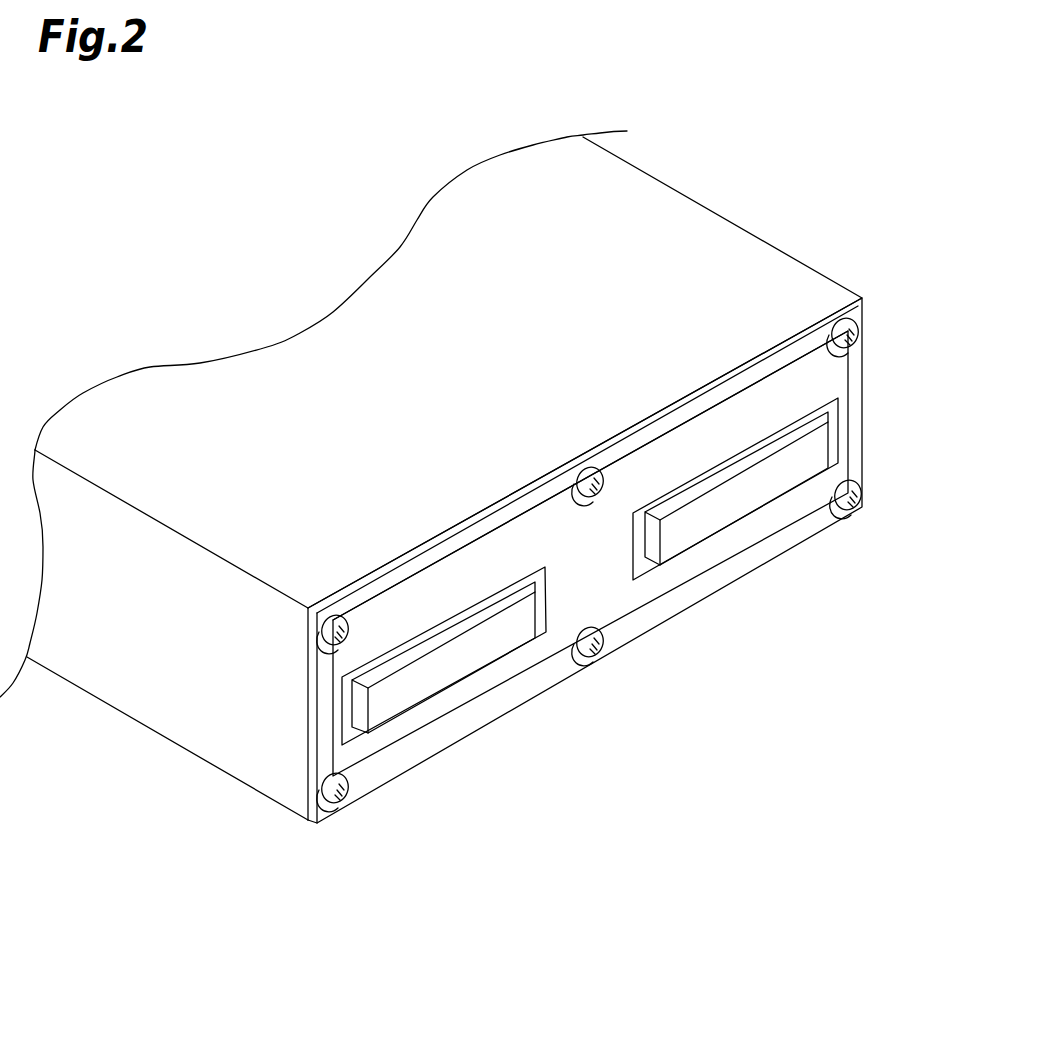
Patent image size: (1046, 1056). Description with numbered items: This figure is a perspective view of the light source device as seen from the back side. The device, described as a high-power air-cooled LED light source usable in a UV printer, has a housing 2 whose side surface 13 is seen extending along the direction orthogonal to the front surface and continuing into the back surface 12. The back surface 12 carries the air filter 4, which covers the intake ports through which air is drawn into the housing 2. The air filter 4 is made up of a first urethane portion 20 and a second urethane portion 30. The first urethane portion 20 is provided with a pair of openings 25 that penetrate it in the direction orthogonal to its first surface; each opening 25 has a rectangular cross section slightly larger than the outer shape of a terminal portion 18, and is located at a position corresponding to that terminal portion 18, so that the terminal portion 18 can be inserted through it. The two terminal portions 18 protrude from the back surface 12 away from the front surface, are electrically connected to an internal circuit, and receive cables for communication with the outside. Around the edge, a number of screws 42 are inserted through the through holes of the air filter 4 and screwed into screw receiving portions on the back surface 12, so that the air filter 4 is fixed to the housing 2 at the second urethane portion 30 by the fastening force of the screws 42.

The housing 2 is at (152, 700).
The air filter 4 is at (641, 633).
The back surface 12 is at (775, 362).
The side surface 13 is at (673, 232).
The terminal portion 18 is at (457, 670).
The first urethane portion 20 is at (503, 553).
The opening 25 is at (357, 733).
The second urethane portion 30 is at (446, 550).
The screw 42 is at (866, 310).